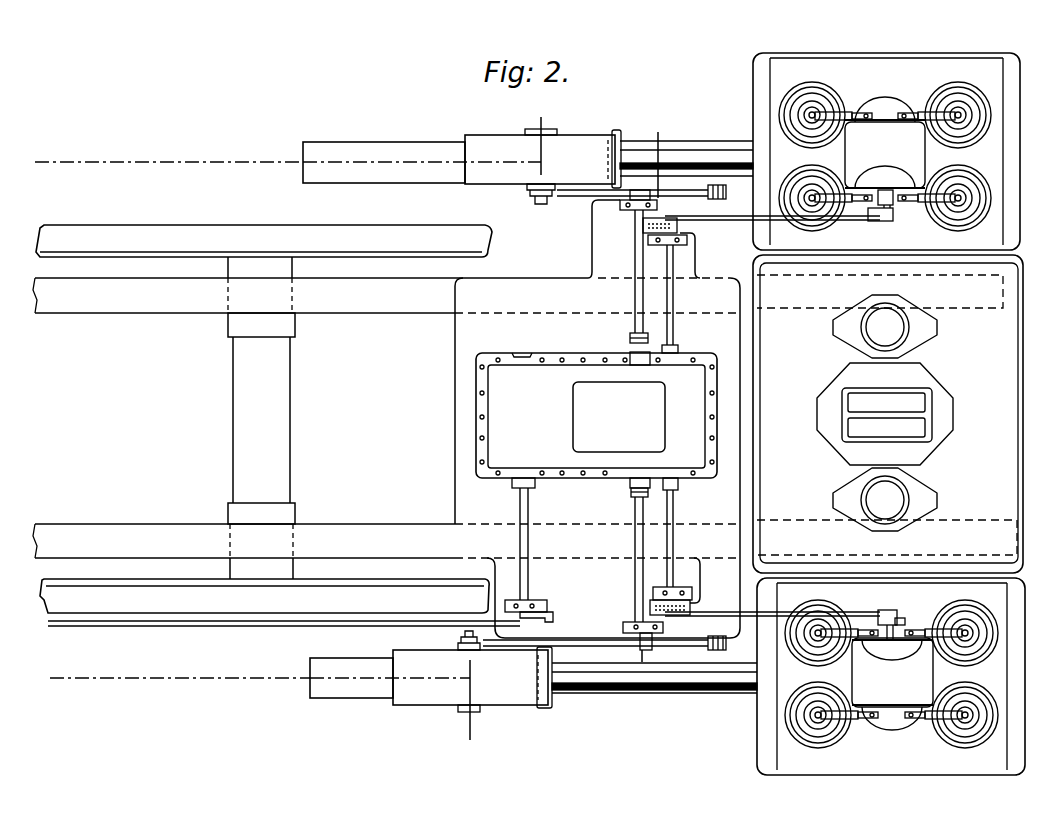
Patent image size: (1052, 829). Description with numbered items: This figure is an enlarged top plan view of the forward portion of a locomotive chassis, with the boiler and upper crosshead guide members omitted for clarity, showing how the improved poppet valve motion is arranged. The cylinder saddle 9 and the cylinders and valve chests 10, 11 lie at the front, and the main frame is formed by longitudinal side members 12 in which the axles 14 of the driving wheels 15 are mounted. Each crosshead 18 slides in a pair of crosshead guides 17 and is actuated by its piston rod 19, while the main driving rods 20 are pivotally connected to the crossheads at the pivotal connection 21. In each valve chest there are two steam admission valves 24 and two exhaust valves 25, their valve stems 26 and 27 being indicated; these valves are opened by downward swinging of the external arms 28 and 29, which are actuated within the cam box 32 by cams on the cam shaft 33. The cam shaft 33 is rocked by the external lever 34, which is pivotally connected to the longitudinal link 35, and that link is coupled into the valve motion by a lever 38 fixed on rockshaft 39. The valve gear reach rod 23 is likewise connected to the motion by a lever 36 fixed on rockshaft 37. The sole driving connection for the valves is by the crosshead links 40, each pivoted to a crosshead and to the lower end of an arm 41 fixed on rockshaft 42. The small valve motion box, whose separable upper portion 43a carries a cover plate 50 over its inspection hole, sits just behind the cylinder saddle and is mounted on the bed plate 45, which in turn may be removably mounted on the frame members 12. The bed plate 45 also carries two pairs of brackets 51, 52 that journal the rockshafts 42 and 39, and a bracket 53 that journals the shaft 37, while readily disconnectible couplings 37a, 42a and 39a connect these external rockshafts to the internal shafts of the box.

The cylinder saddle 9 is at (888, 414).
The cylinders and valve chests 10 is at (753, 83).
The cylinders and valve chests 11 is at (894, 416).
The longitudinal side members 12 is at (382, 314).
The axles 14 is at (278, 435).
The driving wheels 15 is at (172, 226).
The crosshead guides 17 is at (368, 142).
The crosshead 18 is at (590, 135).
The piston rod 19 is at (683, 150).
The main driving rods 20 is at (207, 162).
The pivotal connection 21 is at (541, 122).
The valve gear reach rod 23 is at (121, 628).
The steam admission valves 24 is at (812, 82).
The exhaust valves 25 is at (813, 229).
The valve stems 26 is at (818, 112).
The valve stems 27 is at (810, 195).
The external arms 28 is at (888, 415).
The external arms 29 is at (888, 412).
The cam box 32 is at (889, 413).
The cam shaft 33 is at (900, 622).
The external lever 34 is at (890, 610).
The longitudinal link 35 is at (735, 216).
The lever 36 is at (553, 612).
The rockshaft 37 is at (530, 540).
The coupling 37a is at (513, 486).
The lever 38 is at (663, 226).
The rockshaft 39 is at (675, 292).
The coupling 39a is at (682, 485).
The crosshead links 40 is at (580, 197).
The arm 41 is at (635, 712).
The rockshaft 42 is at (634, 292).
The coupling 42a is at (636, 496).
The upper portion of the valve motion box 43a is at (596, 415).
The bed plate 45 is at (455, 423).
The cover plate 50 is at (619, 417).
The brackets 51 is at (628, 210).
The brackets 52 is at (690, 244).
The bracket 53 is at (532, 600).